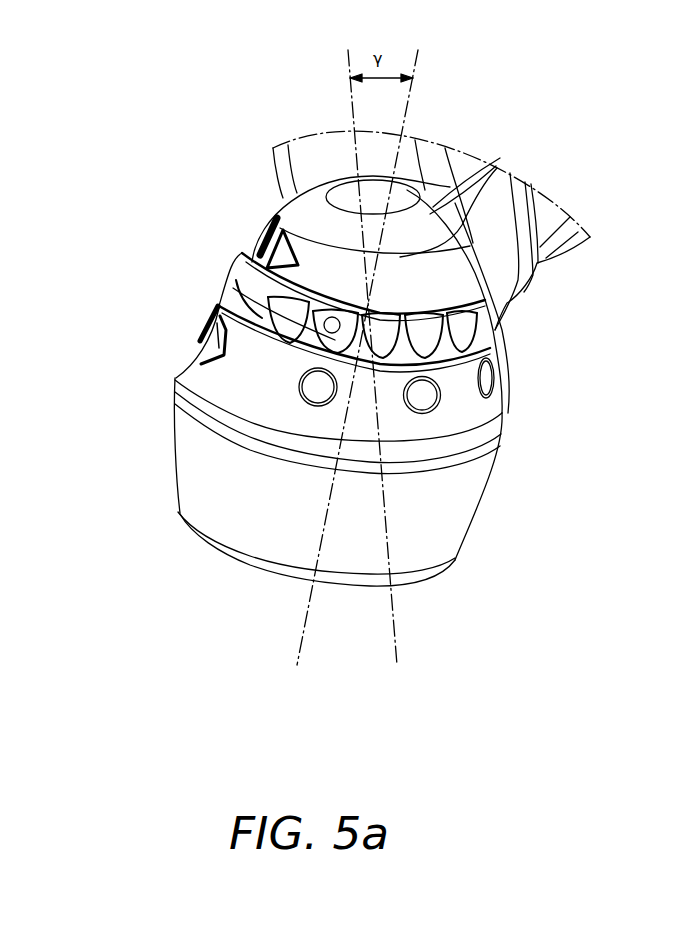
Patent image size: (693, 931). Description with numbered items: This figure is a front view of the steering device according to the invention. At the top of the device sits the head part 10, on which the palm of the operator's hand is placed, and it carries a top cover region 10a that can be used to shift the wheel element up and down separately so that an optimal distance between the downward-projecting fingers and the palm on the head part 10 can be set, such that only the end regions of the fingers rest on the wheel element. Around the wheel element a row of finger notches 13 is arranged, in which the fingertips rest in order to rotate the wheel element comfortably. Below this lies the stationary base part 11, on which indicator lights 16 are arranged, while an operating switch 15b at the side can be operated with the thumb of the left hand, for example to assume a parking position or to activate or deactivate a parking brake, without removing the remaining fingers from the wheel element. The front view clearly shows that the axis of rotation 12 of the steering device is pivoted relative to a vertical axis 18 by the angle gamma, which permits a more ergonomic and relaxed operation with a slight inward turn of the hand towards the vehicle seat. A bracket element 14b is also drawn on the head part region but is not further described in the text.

The head part 10 is at (428, 288).
The top cover region 10a is at (447, 218).
The stationary base part 11 is at (483, 413).
The axis of rotation 12 is at (410, 98).
The finger notches 13 is at (262, 315).
The bracket element 14b is at (257, 240).
The operating switch 15b is at (210, 348).
The indicator lights 16 is at (313, 388).
The vertical axis 18 is at (352, 95).